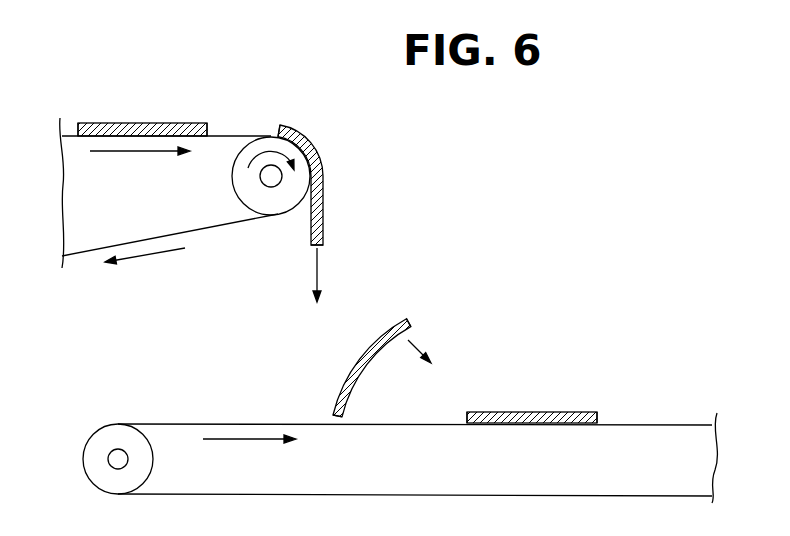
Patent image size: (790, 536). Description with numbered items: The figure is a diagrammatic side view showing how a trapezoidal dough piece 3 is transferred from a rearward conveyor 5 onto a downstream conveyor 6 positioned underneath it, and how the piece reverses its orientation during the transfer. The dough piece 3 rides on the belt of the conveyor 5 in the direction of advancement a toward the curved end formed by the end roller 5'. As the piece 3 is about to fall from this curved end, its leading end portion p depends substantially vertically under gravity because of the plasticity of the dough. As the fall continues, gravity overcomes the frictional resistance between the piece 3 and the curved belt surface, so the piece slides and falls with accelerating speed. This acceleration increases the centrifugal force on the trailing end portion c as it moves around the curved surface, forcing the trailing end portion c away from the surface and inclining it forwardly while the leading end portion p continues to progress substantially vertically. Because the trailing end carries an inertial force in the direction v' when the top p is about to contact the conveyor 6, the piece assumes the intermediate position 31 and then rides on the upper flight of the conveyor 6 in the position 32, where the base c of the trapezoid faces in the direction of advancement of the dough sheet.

The trapezoidal dough piece 3 is at (135, 123).
The rearward conveyor 5 is at (191, 185).
The end roller 5' is at (254, 179).
The downstream conveyor 6 is at (202, 414).
The position of the dough piece 31 is at (370, 344).
The position of the dough piece 32 is at (541, 412).
The leading end portion p is at (207, 130).
The trailing end portion c is at (78, 125).
The direction of advancement a is at (142, 205).
The direction of inertial force v' is at (375, 329).